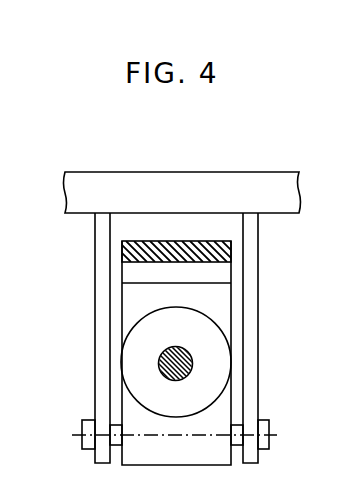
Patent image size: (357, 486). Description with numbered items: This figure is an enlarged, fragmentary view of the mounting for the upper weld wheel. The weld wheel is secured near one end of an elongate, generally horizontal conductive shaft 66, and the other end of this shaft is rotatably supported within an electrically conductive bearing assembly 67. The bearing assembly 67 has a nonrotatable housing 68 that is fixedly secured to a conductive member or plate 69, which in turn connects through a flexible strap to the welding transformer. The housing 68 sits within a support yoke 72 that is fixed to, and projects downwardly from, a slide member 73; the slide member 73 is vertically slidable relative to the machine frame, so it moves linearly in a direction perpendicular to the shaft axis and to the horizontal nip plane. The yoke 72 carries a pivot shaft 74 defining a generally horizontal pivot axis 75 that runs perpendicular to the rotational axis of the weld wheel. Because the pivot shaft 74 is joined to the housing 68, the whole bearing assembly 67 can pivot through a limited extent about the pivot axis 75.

The conductive shaft 66 is at (190, 357).
The bearing assembly 67 is at (147, 348).
The housing 68 is at (218, 297).
The conductive plate 69 is at (193, 250).
The support yoke 72 is at (98, 255).
The slide member 73 is at (155, 187).
The pivot shaft 74 is at (235, 423).
The pivot axis 75 is at (82, 434).